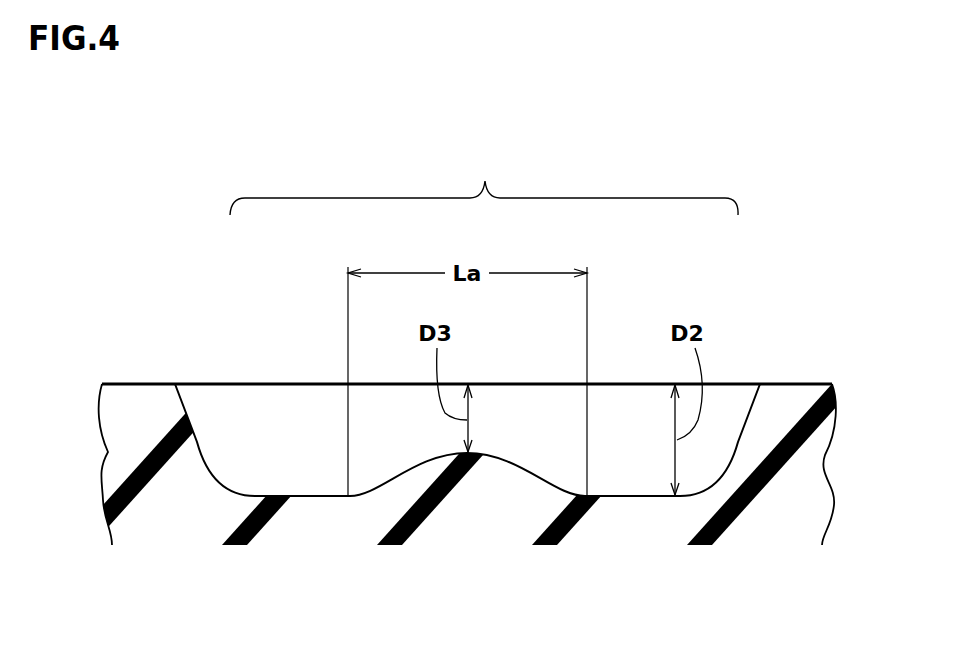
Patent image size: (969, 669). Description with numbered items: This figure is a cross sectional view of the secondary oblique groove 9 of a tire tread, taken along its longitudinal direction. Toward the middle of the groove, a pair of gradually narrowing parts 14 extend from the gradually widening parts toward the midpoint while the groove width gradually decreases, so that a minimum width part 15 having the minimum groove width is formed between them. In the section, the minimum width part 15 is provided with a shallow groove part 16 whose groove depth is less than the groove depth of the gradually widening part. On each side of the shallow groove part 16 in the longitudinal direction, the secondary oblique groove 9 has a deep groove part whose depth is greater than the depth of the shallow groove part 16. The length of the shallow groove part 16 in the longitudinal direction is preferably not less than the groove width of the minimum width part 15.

The secondary oblique groove 9 is at (467, 267).
The gradually narrowing part 14 is at (407, 405).
The minimum width part 15 is at (487, 377).
The shallow groove part 16 is at (465, 453).